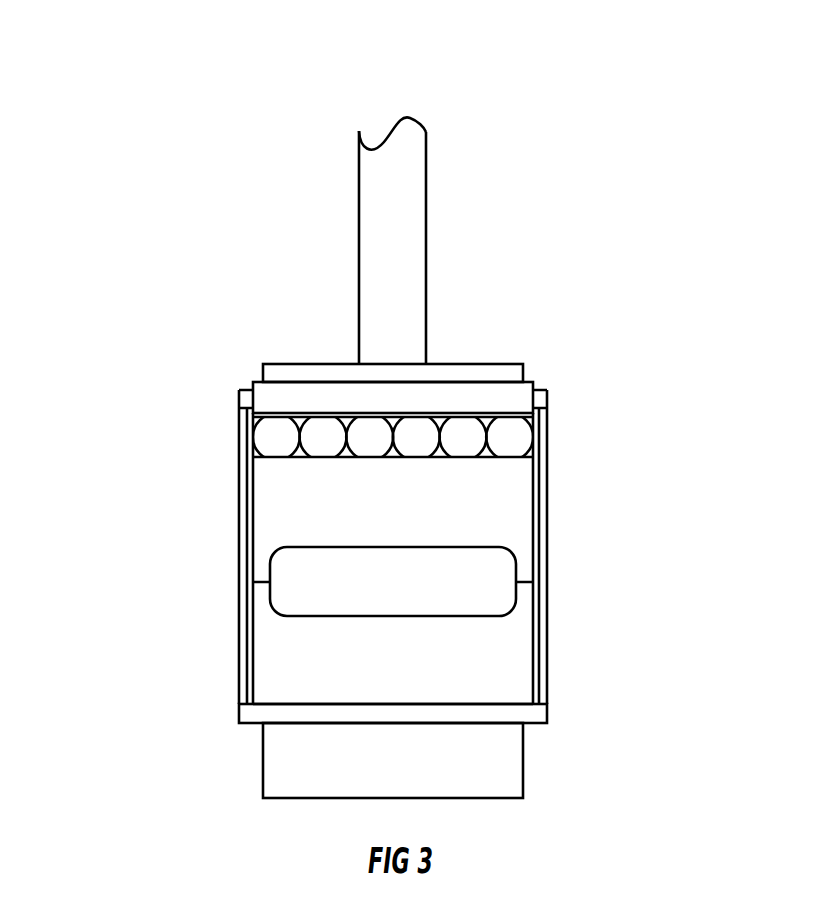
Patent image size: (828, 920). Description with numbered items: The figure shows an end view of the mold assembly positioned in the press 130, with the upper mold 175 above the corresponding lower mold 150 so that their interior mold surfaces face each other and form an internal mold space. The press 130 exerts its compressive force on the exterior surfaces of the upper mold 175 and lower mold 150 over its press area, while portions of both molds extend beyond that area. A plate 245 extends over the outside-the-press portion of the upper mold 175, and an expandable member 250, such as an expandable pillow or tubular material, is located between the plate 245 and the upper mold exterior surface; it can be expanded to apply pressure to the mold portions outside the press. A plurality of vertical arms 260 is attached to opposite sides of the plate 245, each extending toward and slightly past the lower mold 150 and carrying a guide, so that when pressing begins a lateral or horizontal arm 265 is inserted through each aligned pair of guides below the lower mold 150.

The press 130 is at (178, 170).
The plate 245 is at (263, 399).
The expandable member 250 is at (515, 437).
The upper mold 175 is at (275, 513).
The lower mold 150 is at (275, 656).
The vertical arm 260 is at (542, 615).
The horizontal arm 265 is at (262, 713).